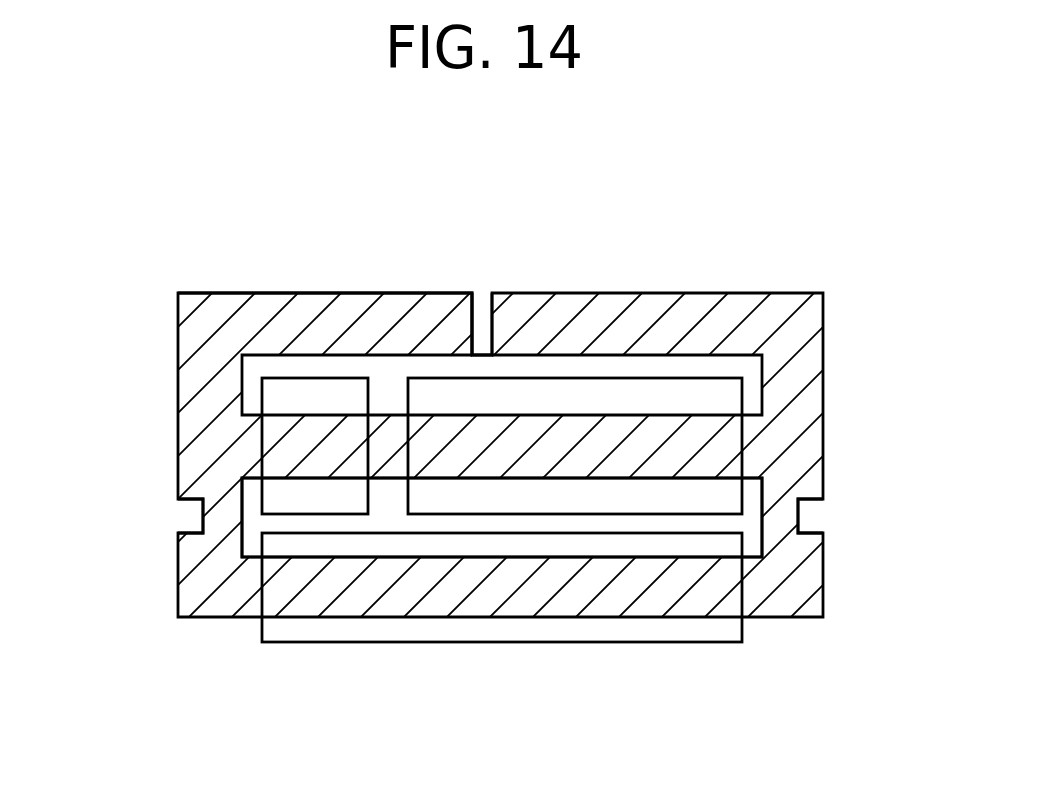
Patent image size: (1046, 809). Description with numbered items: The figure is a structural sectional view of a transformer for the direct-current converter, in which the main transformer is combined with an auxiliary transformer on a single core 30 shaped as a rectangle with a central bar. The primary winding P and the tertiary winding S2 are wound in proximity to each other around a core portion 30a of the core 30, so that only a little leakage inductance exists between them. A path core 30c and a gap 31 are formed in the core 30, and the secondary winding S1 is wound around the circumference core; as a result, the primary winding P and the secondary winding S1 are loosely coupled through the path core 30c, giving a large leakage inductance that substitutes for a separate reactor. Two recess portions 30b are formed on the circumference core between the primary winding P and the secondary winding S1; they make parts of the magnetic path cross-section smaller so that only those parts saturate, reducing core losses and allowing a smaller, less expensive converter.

The core 30 is at (825, 412).
The core portion 30a is at (387, 478).
The recess portions 30b is at (192, 513).
The path core 30c is at (367, 313).
The gap 31 is at (480, 310).
The primary winding P is at (623, 398).
The secondary winding S1 is at (622, 627).
The tertiary winding S2 is at (302, 395).